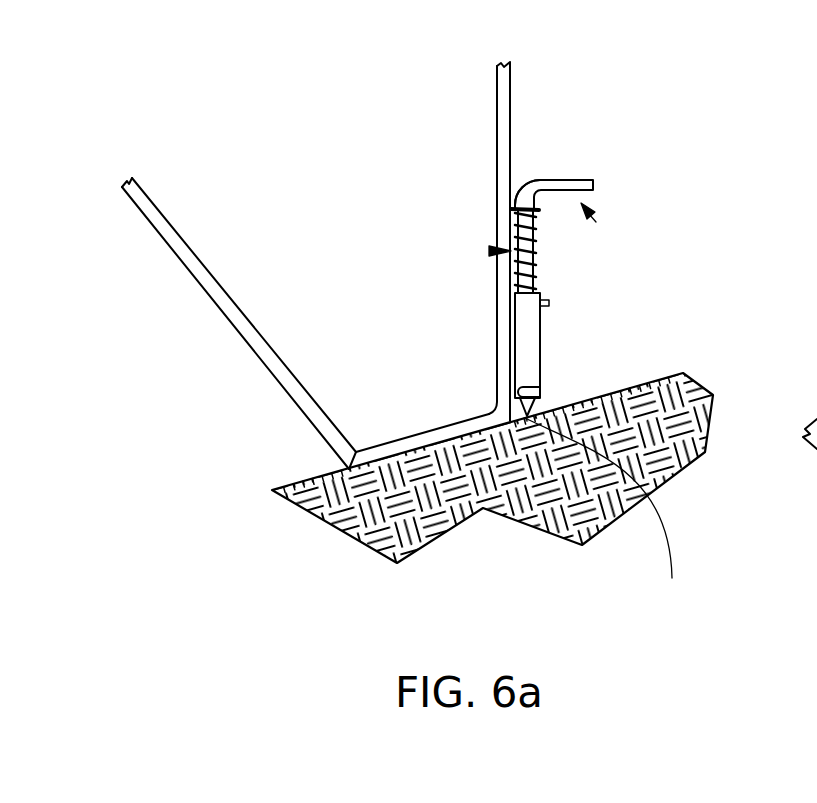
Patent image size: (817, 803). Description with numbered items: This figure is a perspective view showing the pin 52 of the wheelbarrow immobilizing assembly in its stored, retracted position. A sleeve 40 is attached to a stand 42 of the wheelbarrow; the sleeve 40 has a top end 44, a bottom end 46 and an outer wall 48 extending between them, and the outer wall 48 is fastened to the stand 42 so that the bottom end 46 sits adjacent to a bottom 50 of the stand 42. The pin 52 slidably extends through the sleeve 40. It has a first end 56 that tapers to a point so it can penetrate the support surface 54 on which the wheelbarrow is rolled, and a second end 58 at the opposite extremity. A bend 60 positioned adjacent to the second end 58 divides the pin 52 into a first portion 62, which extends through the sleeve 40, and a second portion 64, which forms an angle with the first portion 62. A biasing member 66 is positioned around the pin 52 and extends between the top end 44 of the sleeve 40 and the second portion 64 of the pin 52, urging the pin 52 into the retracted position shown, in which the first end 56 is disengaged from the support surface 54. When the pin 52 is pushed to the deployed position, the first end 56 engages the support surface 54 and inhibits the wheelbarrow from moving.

The sleeve 40 is at (541, 352).
The stand 42 is at (510, 90).
The top end 44 is at (502, 260).
The bottom end 46 is at (610, 519).
The outer wall 48 is at (523, 330).
The bottom 50 is at (418, 449).
The pin 52 is at (549, 149).
The support surface 54 is at (667, 373).
The first end 56 is at (525, 418).
The second end 58 is at (593, 186).
The bend 60 is at (527, 190).
The first portion 62 is at (492, 251).
The second portion 64 is at (596, 222).
The biasing member 66 is at (522, 280).